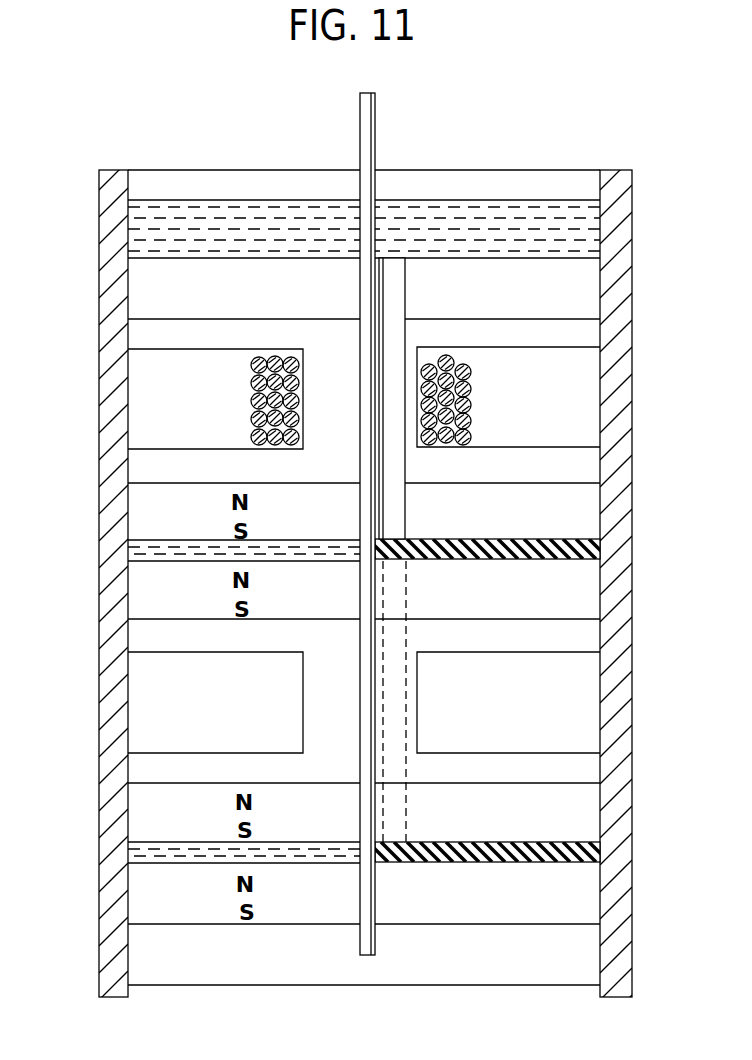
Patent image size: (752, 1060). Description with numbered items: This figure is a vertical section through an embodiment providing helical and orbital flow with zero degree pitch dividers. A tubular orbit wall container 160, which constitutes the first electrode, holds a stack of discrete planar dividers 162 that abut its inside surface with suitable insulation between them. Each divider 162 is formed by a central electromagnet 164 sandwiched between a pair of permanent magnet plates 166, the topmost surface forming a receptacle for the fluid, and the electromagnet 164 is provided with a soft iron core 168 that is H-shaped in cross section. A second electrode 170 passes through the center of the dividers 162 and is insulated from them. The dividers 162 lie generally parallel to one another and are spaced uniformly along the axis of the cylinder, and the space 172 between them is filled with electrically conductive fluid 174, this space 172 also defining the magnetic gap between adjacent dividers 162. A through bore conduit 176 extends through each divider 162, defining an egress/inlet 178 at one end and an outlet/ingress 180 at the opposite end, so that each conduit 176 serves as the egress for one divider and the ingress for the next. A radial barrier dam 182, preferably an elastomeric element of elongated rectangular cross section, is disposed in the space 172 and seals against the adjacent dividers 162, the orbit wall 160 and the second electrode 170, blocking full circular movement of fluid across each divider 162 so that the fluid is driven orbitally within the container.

The orbit wall container 160 is at (99, 210).
The divider 162 is at (533, 381).
The central electromagnet 164 is at (228, 410).
The permanent magnet plate 166 is at (127, 278).
The soft iron core 168 is at (127, 333).
The second electrode 170 is at (360, 130).
The space 172 is at (128, 547).
The electrically conductive fluid 174 is at (165, 238).
The through bore conduit 176 is at (392, 337).
The egress/inlet 178 is at (397, 256).
The outlet/ingress 180 is at (392, 534).
The radial barrier dam 182 is at (601, 548).